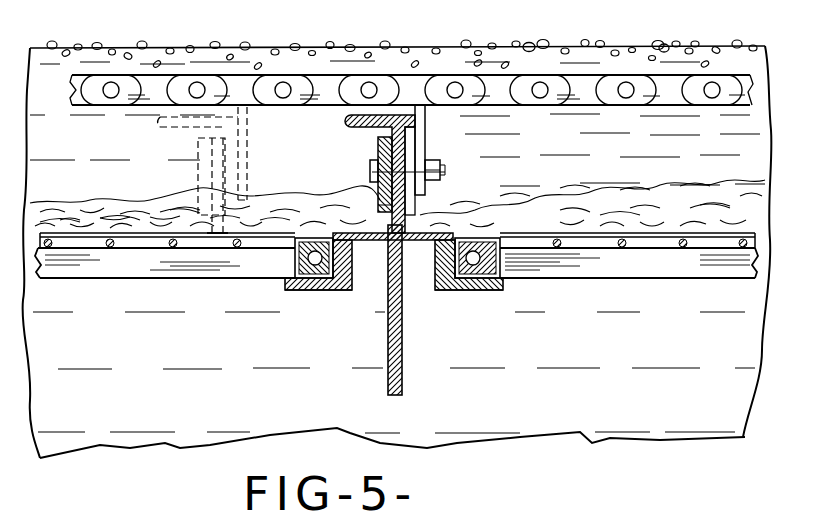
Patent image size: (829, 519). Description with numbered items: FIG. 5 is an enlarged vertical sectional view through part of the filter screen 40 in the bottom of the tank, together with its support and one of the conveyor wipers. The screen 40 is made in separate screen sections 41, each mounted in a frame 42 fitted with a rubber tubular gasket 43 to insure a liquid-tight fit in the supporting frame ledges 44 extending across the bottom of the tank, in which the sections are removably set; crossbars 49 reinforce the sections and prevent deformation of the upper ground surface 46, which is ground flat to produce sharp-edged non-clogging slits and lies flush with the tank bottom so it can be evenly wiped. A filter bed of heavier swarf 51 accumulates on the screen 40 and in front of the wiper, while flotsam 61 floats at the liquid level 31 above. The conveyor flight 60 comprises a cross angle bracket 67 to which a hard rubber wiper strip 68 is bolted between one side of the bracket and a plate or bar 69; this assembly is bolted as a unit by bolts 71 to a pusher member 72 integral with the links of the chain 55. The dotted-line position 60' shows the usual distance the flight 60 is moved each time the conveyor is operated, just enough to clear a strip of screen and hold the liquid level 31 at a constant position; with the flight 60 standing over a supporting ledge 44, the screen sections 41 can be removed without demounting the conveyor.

The liquid level 31 is at (529, 44).
The flotsam 61 is at (664, 45).
The chain 55 is at (511, 100).
The pusher member 72 is at (426, 120).
The conveyor flight 60 is at (432, 171).
The conveyor flight in advanced position 60' is at (234, 170).
The bolts 71 is at (446, 170).
The cross angle bracket 67 is at (416, 206).
The plate or bar 69 is at (378, 206).
The hard rubber wiper strip 68 is at (412, 227).
The upper ground surface 46 is at (265, 231).
The swarf 51 is at (183, 200).
The filter screen 40 is at (580, 294).
The screen section 41 is at (233, 284).
The frame 42 is at (303, 281).
The rubber tubular gasket 43 is at (324, 286).
The supporting frame ledge 44 is at (311, 288).
The crossbar 49 is at (138, 270).